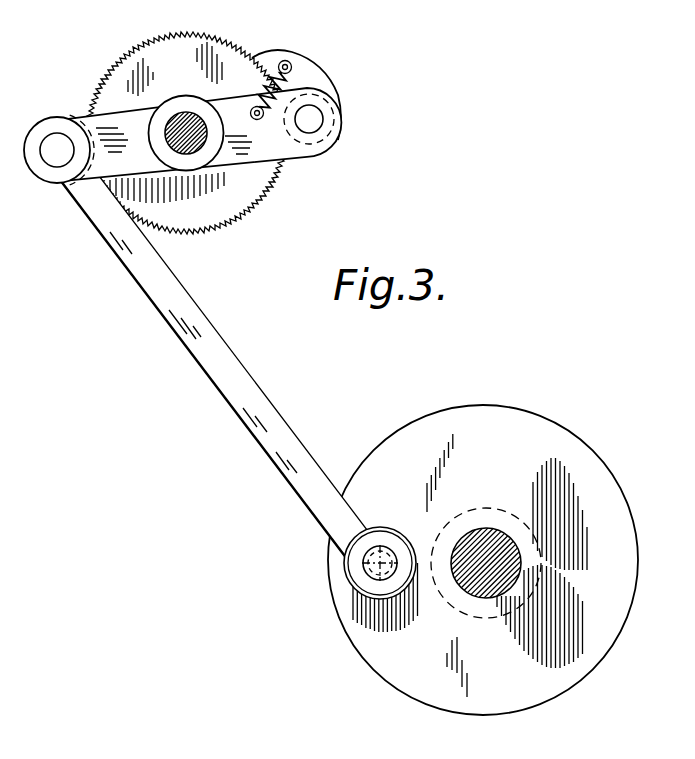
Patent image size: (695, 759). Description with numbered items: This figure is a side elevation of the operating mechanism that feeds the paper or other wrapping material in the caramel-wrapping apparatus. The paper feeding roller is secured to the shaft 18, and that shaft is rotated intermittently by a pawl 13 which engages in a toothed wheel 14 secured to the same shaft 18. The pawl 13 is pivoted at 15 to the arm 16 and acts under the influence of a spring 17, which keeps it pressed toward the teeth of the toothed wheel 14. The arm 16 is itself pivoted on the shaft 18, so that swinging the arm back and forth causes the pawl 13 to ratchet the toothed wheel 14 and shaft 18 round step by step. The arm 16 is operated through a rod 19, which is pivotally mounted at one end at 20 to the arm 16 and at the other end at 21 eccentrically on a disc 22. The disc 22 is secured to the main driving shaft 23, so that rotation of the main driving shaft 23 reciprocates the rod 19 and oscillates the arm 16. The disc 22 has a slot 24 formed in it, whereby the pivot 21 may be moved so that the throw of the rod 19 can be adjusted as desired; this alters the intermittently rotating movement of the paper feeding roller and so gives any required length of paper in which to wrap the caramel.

The pawl 13 is at (312, 68).
The toothed wheel 14 is at (213, 207).
The pivot 15 is at (310, 120).
The arm 16 is at (253, 145).
The spring 17 is at (271, 73).
The shaft 18 is at (182, 115).
The rod 19 is at (217, 383).
The pivot 20 is at (54, 153).
The pivot 21 is at (378, 563).
The disc 22 is at (483, 560).
The main driving shaft 23 is at (485, 547).
The slot 24 is at (368, 577).